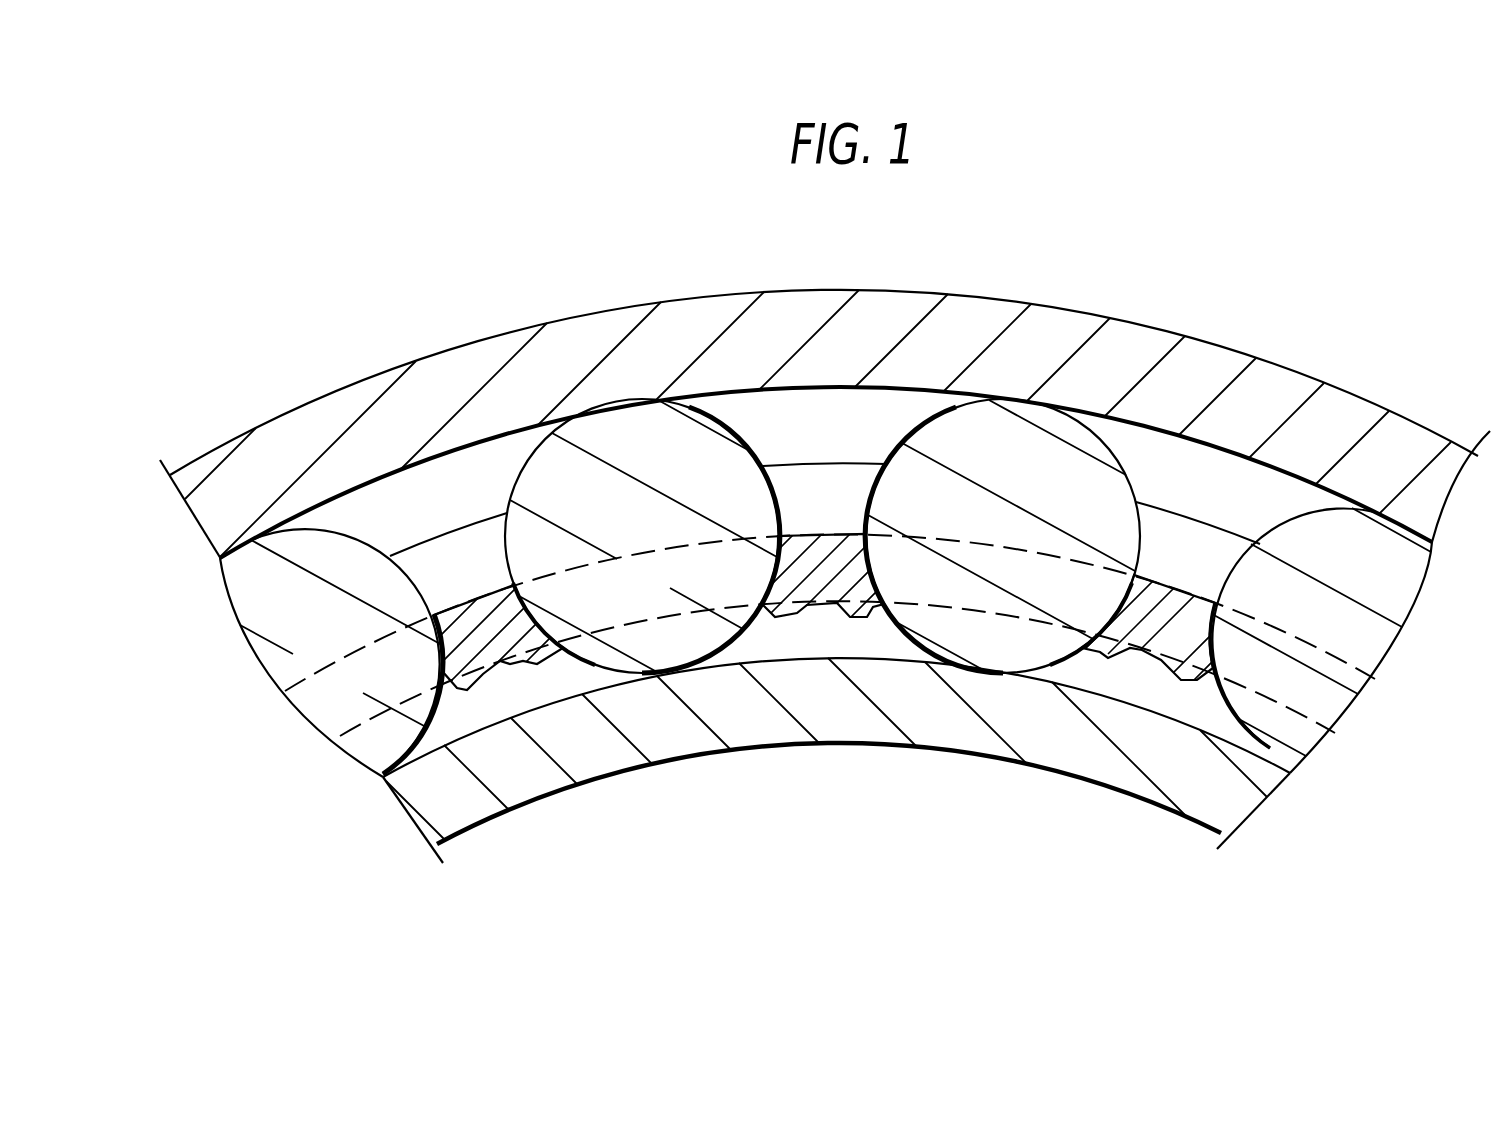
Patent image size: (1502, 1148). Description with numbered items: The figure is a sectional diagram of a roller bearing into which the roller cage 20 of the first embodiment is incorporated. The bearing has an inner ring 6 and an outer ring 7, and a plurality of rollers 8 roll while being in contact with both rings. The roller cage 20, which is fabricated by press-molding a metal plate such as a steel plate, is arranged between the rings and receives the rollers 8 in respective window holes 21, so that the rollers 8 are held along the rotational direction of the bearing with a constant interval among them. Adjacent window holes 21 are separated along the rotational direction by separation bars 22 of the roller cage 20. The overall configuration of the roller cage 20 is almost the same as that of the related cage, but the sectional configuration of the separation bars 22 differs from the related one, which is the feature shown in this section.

The inner ring 6 is at (1212, 338).
The outer ring 7 is at (987, 778).
The rollers 8 is at (348, 672).
The roller cage 20 is at (816, 595).
The window holes 21 is at (338, 720).
The separation bars 22 is at (521, 682).